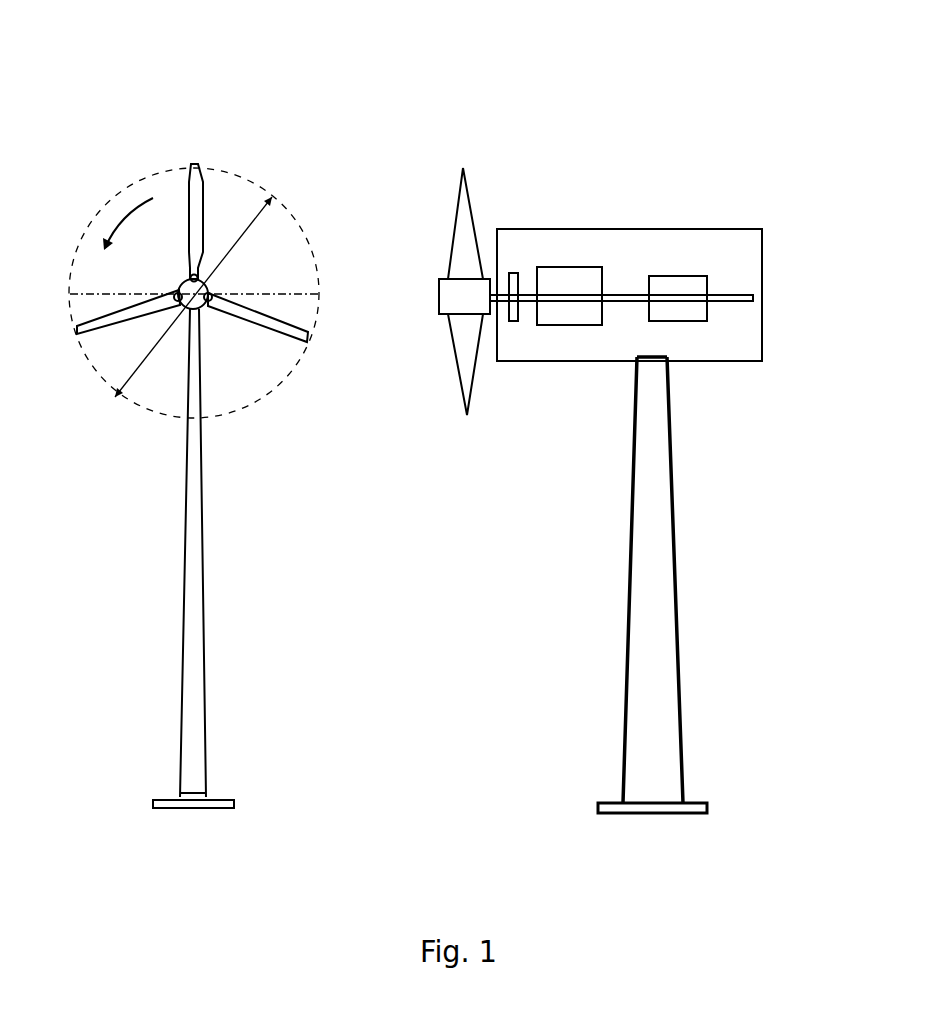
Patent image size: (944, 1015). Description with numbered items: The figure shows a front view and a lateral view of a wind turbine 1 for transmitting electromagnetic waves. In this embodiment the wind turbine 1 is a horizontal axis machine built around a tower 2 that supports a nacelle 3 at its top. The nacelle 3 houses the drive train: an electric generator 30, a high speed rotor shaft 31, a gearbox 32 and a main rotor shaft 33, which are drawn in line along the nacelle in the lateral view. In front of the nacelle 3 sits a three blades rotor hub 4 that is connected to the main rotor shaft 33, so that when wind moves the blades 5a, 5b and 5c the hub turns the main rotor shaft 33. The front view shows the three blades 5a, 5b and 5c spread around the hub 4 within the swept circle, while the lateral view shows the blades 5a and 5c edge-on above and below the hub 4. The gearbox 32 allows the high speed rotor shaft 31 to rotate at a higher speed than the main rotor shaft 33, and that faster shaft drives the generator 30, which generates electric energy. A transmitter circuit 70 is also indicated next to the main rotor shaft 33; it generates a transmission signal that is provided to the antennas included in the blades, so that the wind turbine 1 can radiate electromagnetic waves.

The wind turbine 1 is at (237, 125).
The tower 2 is at (195, 533).
The nacelle 3 is at (555, 229).
The three blades rotor hub 4 is at (188, 306).
The blade 5a is at (192, 188).
The blade 5b is at (122, 318).
The blade 5c is at (268, 322).
The electric generator 30 is at (682, 276).
The high speed rotor shaft 31 is at (637, 298).
The gearbox 32 is at (588, 283).
The main rotor shaft 33 is at (525, 297).
The transmitter circuit 70 is at (513, 322).